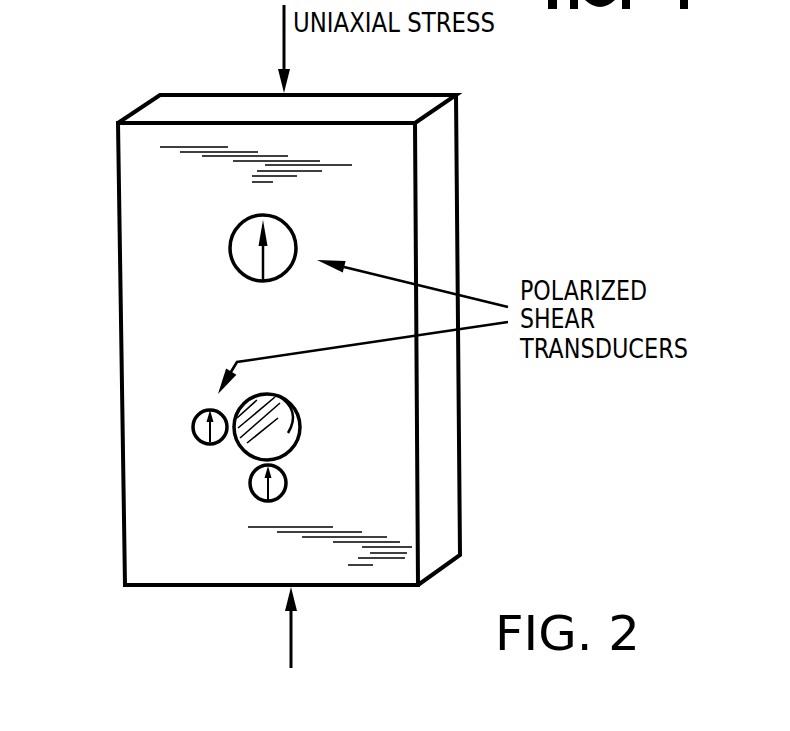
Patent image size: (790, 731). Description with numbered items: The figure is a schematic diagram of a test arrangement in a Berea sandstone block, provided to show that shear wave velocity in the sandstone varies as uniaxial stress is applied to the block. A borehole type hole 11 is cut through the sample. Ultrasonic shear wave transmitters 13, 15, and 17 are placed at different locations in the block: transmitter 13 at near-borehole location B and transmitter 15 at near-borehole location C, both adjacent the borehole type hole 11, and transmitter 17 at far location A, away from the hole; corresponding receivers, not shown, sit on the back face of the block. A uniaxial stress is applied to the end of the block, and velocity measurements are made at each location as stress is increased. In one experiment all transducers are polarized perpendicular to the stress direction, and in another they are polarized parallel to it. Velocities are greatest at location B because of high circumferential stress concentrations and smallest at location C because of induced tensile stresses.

The ultrasonic shear wave transmitter 17 is at (237, 270).
The ultrasonic shear wave transmitter 13 is at (193, 427).
The ultrasonic shear wave transmitter 15 is at (255, 492).
The borehole type hole 11 is at (322, 446).